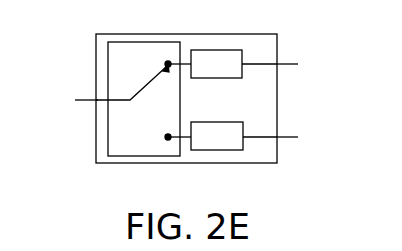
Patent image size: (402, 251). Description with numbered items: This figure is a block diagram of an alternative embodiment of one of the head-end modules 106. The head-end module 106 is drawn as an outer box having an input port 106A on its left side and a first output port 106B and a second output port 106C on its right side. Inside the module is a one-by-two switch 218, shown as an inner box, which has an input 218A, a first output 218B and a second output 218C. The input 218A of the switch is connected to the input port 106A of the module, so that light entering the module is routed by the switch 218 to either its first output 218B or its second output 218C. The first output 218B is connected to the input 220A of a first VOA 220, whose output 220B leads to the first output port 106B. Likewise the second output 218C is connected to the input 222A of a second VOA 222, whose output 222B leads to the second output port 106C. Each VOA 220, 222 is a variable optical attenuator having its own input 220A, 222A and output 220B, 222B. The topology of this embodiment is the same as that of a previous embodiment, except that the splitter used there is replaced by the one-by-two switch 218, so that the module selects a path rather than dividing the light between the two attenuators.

The head-end module 106 is at (96, 34).
The input port 106A is at (95, 102).
The first output port 106B is at (279, 67).
The second output port 106C is at (279, 137).
The 1×2 switch 218 is at (152, 148).
The input 218A is at (108, 99).
The first output 218B is at (167, 63).
The second output 218C is at (171, 141).
The first VOA 220 is at (213, 79).
The input 220A is at (184, 57).
The output 220B is at (246, 63).
The second VOA 222 is at (233, 122).
The input 222A is at (185, 142).
The output 222B is at (246, 138).